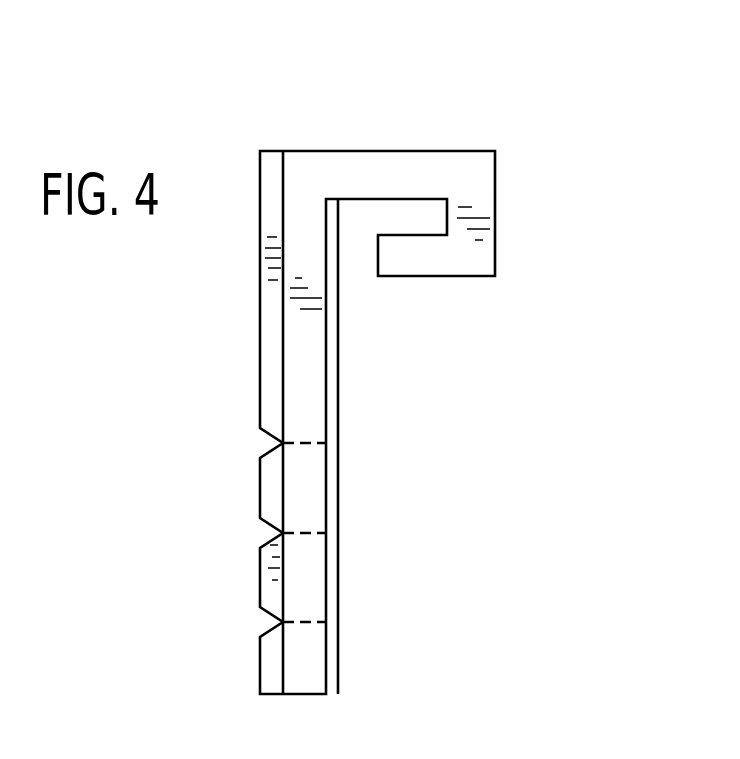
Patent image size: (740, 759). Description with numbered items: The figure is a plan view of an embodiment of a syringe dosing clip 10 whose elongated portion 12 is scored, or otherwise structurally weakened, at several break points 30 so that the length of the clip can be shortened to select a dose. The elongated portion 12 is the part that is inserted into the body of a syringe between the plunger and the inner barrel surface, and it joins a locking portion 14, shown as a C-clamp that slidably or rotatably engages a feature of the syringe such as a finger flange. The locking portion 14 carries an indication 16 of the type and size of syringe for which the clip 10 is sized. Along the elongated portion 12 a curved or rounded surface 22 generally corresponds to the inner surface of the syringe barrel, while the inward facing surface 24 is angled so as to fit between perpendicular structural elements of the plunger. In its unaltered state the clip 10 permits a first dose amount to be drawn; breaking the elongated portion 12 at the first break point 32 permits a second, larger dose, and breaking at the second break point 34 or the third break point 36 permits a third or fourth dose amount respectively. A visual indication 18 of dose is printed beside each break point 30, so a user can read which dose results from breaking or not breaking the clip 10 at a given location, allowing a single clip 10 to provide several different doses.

The clip 10 is at (594, 114).
The elongated portion 12 is at (240, 152).
The locking portion 14 is at (495, 135).
The indication of syringe type and/or size 16 is at (476, 172).
The indication of dose 18 is at (332, 598).
The curved or rounded surface 22 is at (332, 358).
The inward facing surface 24 is at (264, 147).
The break points 30 is at (372, 444).
The first break point 32 is at (316, 624).
The second break point 34 is at (316, 538).
The third break point 36 is at (319, 440).